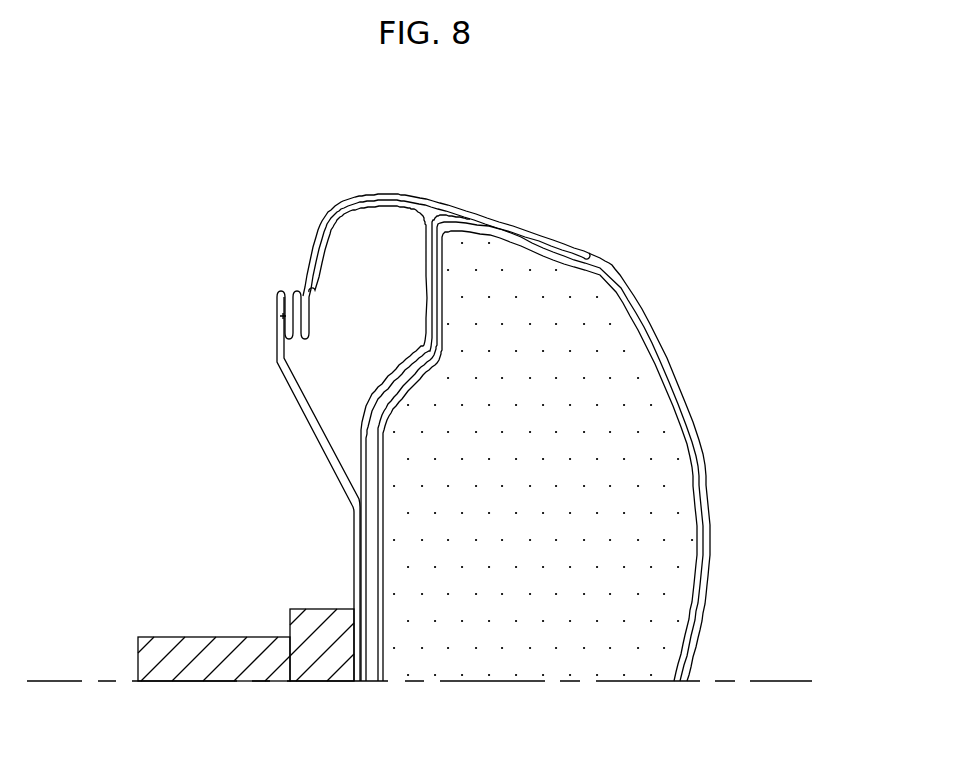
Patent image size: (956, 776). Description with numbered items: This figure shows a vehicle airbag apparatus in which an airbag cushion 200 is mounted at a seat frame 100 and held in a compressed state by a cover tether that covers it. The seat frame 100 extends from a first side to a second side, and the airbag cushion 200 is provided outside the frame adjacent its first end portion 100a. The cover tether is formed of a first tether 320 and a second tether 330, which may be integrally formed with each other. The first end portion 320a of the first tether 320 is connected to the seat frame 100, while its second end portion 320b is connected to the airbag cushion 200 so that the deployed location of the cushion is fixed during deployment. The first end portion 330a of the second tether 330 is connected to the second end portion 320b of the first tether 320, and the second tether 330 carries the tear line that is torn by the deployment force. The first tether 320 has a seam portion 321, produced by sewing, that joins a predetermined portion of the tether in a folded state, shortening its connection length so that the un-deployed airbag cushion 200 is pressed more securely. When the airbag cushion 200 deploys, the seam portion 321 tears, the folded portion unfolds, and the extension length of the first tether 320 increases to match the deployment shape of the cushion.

The seat frame 100 is at (357, 582).
The first end portion of the seat frame 100a is at (363, 441).
The airbag cushion 200 is at (675, 553).
The first tether 320 is at (430, 193).
The first end portion of the first tether 320a is at (356, 521).
The second end portion of the first tether 320b is at (538, 231).
The seam portion 321 is at (278, 299).
The second tether 330 is at (701, 447).
The first end portion of the second tether 330a is at (655, 330).
The sewing line sewing is at (281, 316).